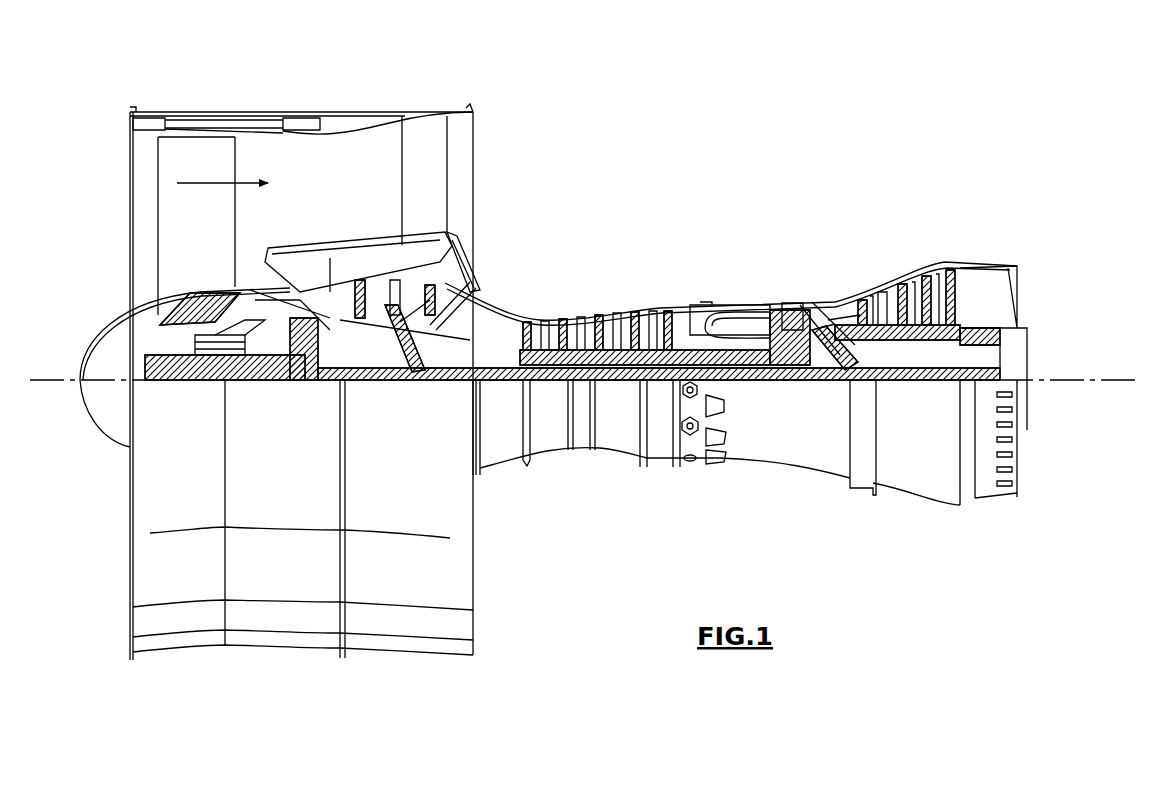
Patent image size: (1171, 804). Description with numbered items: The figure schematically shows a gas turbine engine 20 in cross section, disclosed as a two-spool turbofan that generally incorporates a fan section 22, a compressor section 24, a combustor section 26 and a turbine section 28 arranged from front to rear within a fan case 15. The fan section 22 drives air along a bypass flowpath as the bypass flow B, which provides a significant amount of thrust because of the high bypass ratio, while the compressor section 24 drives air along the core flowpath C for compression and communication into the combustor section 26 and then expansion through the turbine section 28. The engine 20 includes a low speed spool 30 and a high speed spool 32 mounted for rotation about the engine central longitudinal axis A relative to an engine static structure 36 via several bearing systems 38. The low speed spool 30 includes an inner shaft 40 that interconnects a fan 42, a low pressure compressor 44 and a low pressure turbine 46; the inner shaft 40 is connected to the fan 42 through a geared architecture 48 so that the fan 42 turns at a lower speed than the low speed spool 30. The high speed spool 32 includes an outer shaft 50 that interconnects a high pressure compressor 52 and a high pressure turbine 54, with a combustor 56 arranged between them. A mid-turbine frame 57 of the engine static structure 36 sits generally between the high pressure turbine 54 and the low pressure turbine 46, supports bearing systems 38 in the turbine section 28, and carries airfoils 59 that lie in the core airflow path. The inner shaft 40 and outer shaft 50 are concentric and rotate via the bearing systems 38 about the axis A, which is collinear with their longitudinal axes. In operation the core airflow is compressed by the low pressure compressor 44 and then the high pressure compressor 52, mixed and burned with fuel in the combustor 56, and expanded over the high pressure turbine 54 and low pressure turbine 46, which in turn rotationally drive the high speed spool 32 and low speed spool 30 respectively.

The fan case 15 is at (300, 112).
The gas turbine engine 20 is at (742, 154).
The fan section 22 is at (236, 102).
The compressor section 24 is at (520, 294).
The combustor section 26 is at (731, 282).
The turbine section 28 is at (868, 246).
The low speed spool 30 is at (620, 392).
The high speed spool 32 is at (660, 340).
The engine static structure 36 is at (658, 470).
The bearing systems 38 is at (428, 373).
The inner shaft 40 is at (491, 382).
The fan 42 is at (208, 232).
The low pressure compressor 44 is at (416, 292).
The low pressure turbine 46 is at (911, 272).
The geared architecture 48 is at (305, 368).
The outer shaft 50 is at (738, 381).
The high pressure compressor 52 is at (604, 356).
The high pressure turbine 54 is at (793, 302).
The combustor 56 is at (736, 324).
The mid-turbine frame 57 is at (832, 298).
The airfoils 59 is at (856, 341).
The engine central longitudinal axis A is at (1105, 380).
The bypass flow B is at (209, 183).
The core flow path C is at (304, 282).